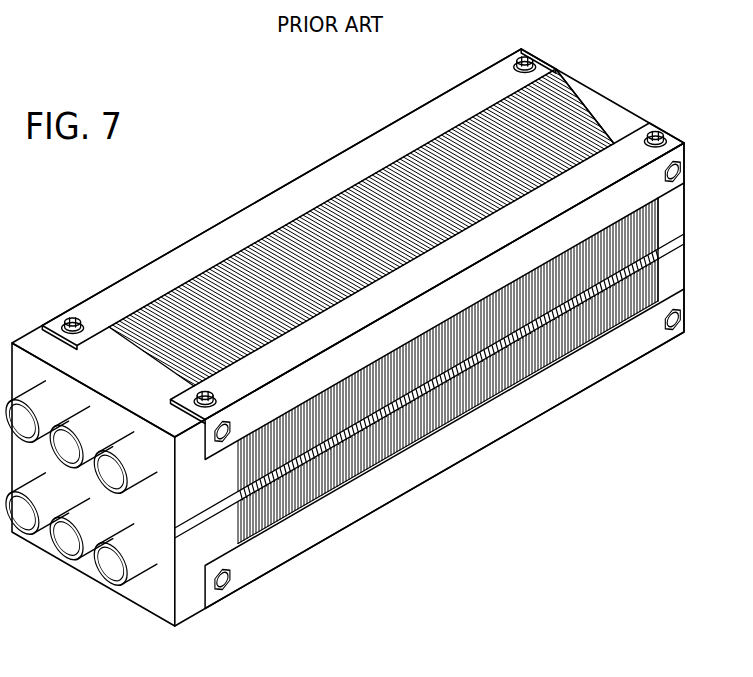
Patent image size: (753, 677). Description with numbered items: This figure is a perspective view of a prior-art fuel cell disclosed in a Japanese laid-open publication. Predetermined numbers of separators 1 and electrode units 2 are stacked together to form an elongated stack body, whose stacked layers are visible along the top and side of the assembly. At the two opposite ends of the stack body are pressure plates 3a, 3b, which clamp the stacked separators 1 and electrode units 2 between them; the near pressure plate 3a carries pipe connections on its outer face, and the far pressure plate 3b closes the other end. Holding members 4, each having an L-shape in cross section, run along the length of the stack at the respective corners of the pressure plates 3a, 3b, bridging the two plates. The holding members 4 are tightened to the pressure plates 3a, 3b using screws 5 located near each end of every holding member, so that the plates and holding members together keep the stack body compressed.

The separator 1 is at (403, 435).
The electrode unit 2 is at (462, 402).
The pressure plate 3a is at (188, 607).
The pressure plate 3b is at (665, 272).
The holding member 4 is at (621, 165).
The screw 5 is at (72, 320).